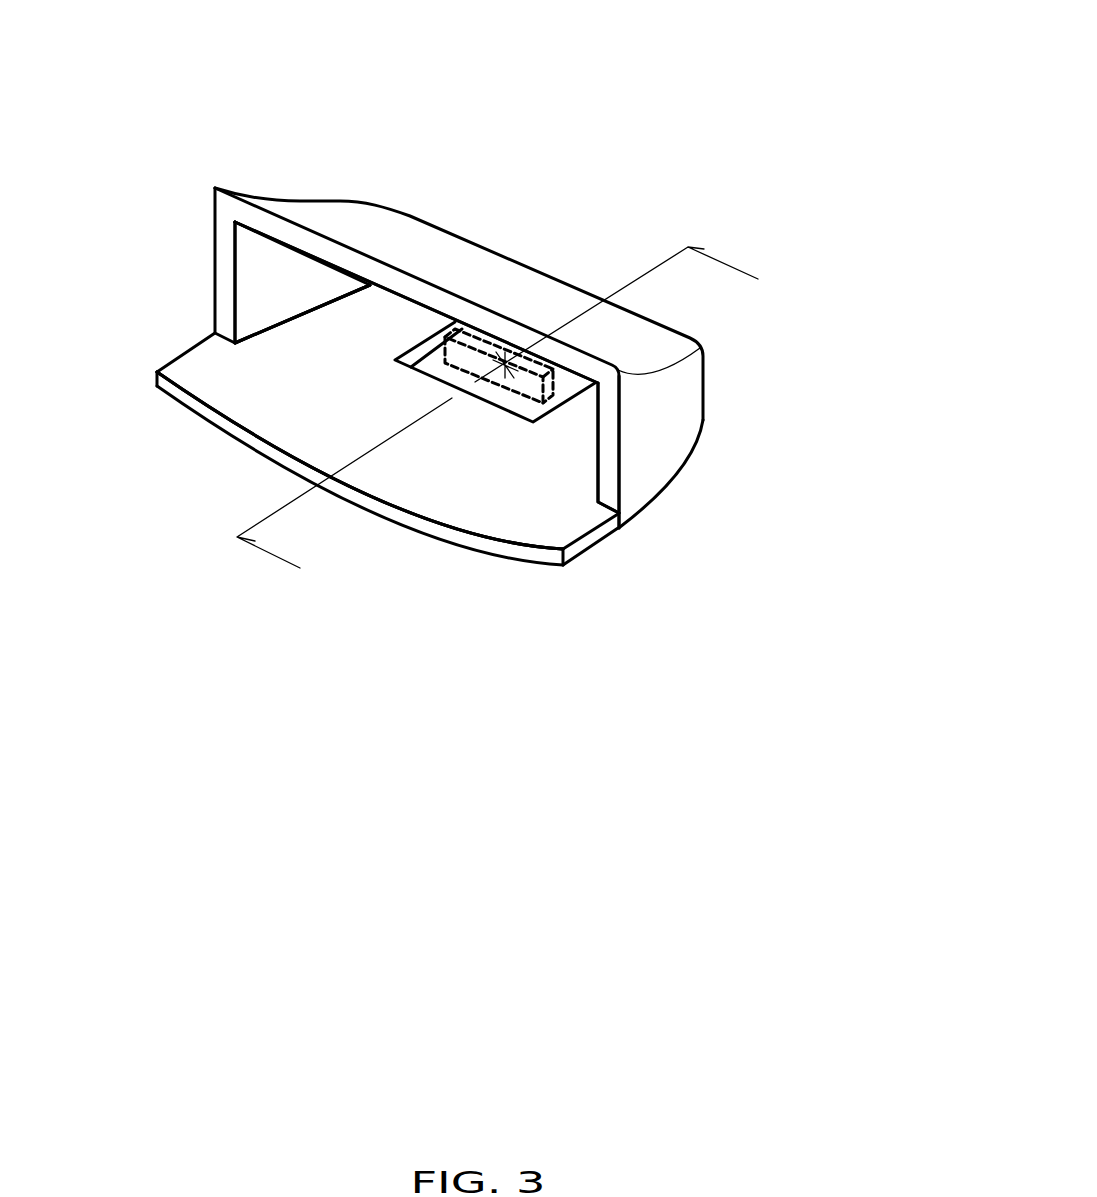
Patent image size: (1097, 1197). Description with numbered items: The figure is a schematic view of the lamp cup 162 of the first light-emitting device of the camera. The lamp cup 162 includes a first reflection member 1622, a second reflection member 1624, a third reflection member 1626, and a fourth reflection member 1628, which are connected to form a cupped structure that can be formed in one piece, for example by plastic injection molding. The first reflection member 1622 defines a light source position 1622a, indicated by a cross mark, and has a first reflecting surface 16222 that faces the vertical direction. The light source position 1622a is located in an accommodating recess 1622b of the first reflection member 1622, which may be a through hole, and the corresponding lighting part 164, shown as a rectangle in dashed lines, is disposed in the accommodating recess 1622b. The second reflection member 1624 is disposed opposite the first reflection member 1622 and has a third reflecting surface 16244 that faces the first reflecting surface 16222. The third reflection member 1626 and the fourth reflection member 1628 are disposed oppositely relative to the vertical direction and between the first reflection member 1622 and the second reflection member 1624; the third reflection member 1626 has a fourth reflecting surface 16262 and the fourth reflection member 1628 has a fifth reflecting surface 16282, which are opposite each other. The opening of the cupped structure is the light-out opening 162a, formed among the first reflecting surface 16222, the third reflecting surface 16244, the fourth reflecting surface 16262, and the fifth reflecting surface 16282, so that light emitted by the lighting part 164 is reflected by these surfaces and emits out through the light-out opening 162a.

The lamp cup 162 is at (632, 95).
The light-out opening 162a is at (315, 268).
The first reflection member 1622 is at (512, 550).
The light source position 1622a is at (507, 370).
The accommodating recess 1622b is at (428, 355).
The first reflecting surface 16222 is at (487, 458).
The second reflection member 1624 is at (470, 258).
The third reflecting surface 16244 is at (392, 293).
The lighting part 164 is at (490, 352).
The third reflection member 1626 is at (222, 263).
The fourth reflecting surface 16262 is at (260, 288).
The fourth reflection member 1628 is at (663, 453).
The fifth reflecting surface 16282 is at (596, 470).